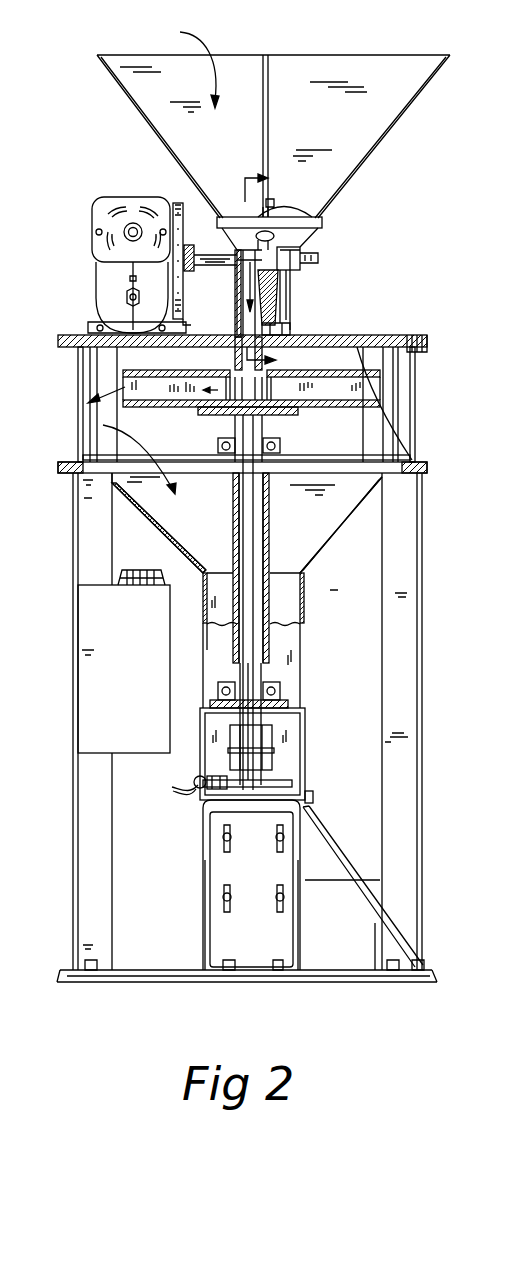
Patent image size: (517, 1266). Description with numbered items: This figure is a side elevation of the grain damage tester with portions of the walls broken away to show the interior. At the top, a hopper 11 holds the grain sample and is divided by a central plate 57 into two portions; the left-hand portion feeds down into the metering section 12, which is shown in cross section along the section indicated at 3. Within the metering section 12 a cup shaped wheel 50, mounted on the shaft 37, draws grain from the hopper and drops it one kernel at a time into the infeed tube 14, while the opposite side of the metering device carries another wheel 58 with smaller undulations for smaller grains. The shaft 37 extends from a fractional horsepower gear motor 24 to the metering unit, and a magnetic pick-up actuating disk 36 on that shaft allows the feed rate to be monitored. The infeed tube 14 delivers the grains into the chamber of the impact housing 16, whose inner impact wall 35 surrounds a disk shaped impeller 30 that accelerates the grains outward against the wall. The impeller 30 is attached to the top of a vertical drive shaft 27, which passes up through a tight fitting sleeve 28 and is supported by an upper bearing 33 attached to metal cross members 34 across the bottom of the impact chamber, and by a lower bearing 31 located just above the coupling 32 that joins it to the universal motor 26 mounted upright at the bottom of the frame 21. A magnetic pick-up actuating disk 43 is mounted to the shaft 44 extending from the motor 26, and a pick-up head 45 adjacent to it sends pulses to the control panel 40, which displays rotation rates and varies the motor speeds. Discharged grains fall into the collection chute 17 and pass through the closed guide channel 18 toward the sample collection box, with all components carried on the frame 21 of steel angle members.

The section line III-III 3 is at (268, 272).
The hopper 11 is at (143, 122).
The metering section 12 is at (311, 242).
The infeed tube 14 is at (235, 322).
The impact housing 16 is at (416, 410).
The collection chute 17 is at (320, 555).
The closed guide channel 18 is at (304, 600).
The frame 21 is at (423, 643).
The gear motor 24 is at (110, 197).
The universal motor 26 is at (206, 848).
The vertical drive shaft 27 is at (262, 678).
The tight fitting sleeve 28 is at (270, 648).
The disk shaped impeller 30 is at (332, 408).
The lower bearing 31 is at (281, 692).
The coupling 32 is at (273, 738).
The upper bearing 33 is at (281, 443).
The cross members 34 is at (178, 455).
The inner impact wall 35 is at (122, 418).
The magnetic pick-up actuating disk 36 is at (177, 203).
The shaft 37 is at (211, 268).
The control panel 40 is at (124, 661).
The magnetic pick-up actuating disk 43 is at (281, 778).
The shaft 44 is at (238, 792).
The pick-up head 45 is at (193, 774).
The cup shaped wheel 50 is at (286, 327).
The central plate 57 is at (268, 88).
The wheel 58 is at (279, 298).